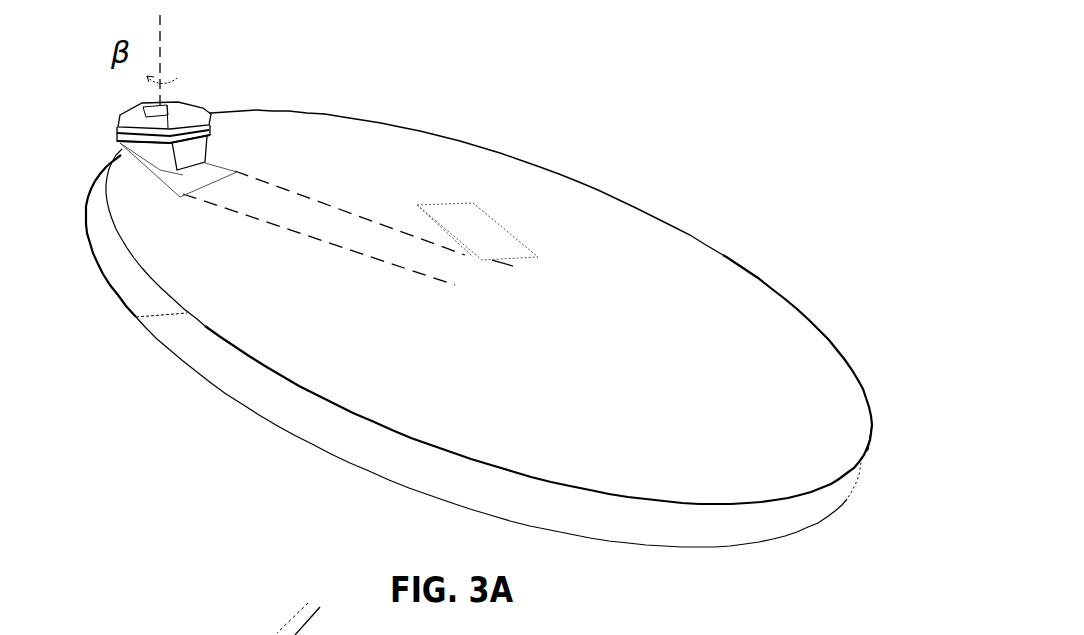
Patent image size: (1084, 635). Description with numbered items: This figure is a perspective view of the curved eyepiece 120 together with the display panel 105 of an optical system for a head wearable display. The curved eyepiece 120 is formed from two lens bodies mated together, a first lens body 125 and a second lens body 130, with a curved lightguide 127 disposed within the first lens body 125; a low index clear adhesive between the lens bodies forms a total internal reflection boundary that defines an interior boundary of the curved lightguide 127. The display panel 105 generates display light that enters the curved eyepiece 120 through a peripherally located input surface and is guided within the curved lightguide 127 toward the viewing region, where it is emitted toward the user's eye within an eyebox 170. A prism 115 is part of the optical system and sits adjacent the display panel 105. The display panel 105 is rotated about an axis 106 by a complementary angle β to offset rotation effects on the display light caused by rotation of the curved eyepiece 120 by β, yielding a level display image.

The display panel 105 is at (118, 130).
The rotation axis 106 is at (160, 52).
The prism 115 is at (193, 153).
The curved eyepiece 120 is at (720, 210).
The first lens body 125 is at (137, 287).
The curved lightguide 127 is at (342, 213).
The second lens body 130 is at (350, 442).
The eyebox 170 is at (470, 213).